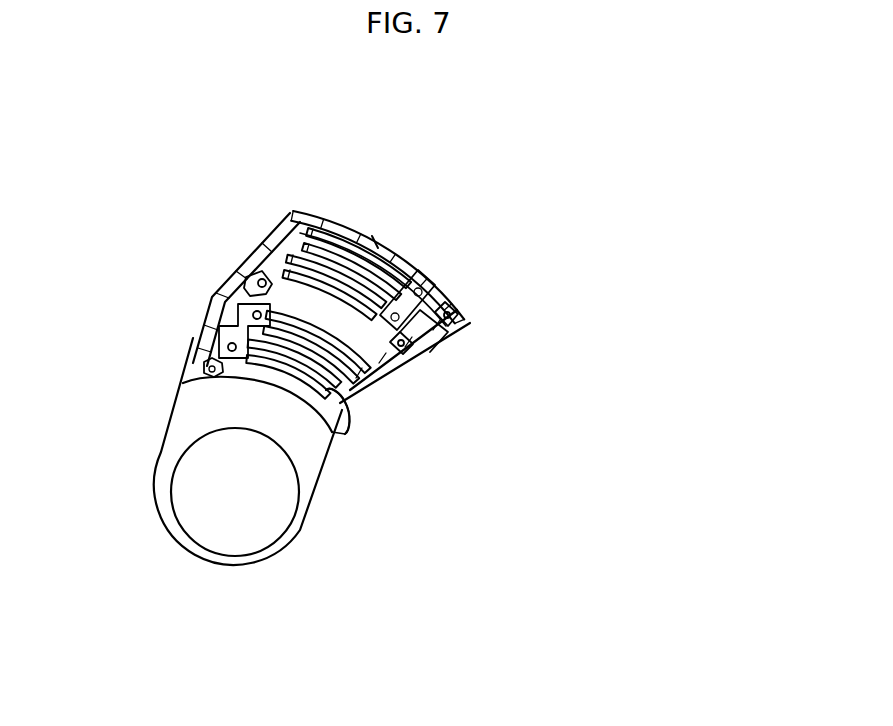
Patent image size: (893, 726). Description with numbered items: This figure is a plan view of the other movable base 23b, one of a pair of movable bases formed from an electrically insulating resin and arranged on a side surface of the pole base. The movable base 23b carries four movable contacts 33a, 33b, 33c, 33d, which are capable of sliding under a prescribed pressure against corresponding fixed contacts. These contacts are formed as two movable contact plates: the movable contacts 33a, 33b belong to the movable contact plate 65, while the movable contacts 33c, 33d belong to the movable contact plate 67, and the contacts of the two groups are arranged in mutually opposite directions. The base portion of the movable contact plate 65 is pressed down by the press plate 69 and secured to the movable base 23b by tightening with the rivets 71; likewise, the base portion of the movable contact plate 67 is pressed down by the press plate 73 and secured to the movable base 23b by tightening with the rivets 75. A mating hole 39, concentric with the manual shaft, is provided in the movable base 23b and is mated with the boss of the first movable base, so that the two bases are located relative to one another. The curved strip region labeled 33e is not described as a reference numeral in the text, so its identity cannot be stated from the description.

The movable base 23b is at (357, 230).
The movable contact 33a is at (337, 223).
The movable contact 33b is at (280, 228).
The movable contact 33c is at (383, 387).
The movable contact 33d is at (348, 422).
The upper curved strips 33e is at (347, 274).
The mating hole 39 is at (220, 546).
The movable contact plate 65 is at (368, 242).
The movable contact plate 67 is at (263, 360).
The press plate 69 is at (410, 307).
The rivets 71 is at (432, 277).
The press plate 73 is at (237, 318).
The rivets 75 is at (228, 343).